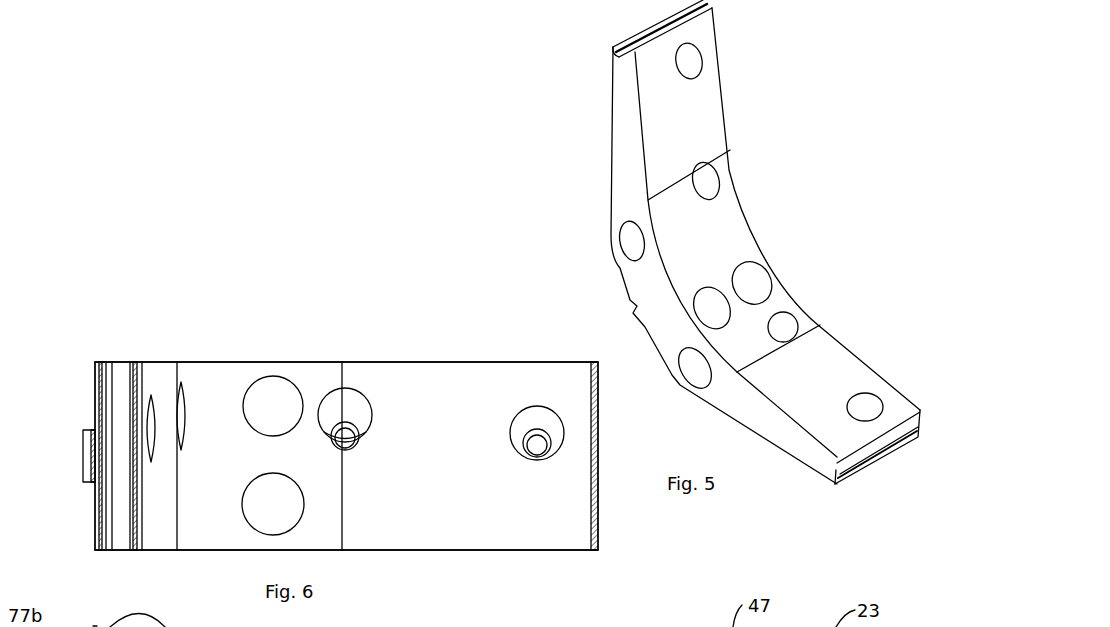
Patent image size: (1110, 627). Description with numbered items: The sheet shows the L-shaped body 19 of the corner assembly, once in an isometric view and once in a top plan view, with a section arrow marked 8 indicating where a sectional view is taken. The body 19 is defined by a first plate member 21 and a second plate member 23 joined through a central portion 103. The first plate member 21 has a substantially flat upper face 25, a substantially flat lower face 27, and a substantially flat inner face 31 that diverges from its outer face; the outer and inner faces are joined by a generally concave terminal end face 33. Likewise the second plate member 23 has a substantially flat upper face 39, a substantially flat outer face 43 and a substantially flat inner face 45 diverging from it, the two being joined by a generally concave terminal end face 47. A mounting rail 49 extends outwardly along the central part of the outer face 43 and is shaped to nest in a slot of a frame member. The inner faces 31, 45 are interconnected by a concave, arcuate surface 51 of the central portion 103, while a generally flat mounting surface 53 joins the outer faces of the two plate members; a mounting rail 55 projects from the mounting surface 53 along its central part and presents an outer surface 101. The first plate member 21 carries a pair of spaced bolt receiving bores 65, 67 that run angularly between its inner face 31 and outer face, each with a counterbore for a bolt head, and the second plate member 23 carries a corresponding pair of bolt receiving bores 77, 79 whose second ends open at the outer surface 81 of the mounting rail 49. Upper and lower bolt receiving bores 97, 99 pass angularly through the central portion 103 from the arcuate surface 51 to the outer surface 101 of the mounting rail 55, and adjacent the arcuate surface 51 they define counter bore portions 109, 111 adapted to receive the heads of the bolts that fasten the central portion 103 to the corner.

In FIG. 6, the section line 8 is at (530, 626).
In FIG. 5, the L-shaped body 19 is at (762, 166).
In FIG. 6, the first plate member 21 is at (418, 355).
In FIG. 5, the first plate member 21 is at (780, 455).
In FIG. 6, the second plate member 23 is at (105, 554).
In FIG. 5, the second plate member 23 is at (610, 100).
In FIG. 6, the upper face 25 is at (509, 552).
In FIG. 5, the upper face 25 is at (757, 415).
In FIG. 6, the lower face 27 is at (469, 362).
In FIG. 6, the inner face 31 is at (438, 469).
In FIG. 5, the inner face 31 is at (807, 390).
In FIG. 6, the terminal end face 33 is at (599, 488).
In FIG. 5, the terminal end face 33 is at (850, 468).
In FIG. 5, the upper face 39 is at (638, 168).
In FIG. 6, the outer face 43 is at (94, 405).
In FIG. 5, the inner face 45 is at (672, 116).
In FIG. 5, the terminal end face 47 is at (616, 47).
In FIG. 6, the mounting rail 49 is at (84, 482).
In FIG. 6, the arcuate surface 51 is at (222, 469).
In FIG. 5, the arcuate surface 51 is at (724, 229).
In FIG. 5, the mounting surface 53 is at (611, 262).
In FIG. 5, the mounting rail 55 is at (628, 306).
In FIG. 6, the bolt receiving bore 65 is at (541, 408).
In FIG. 5, the bolt receiving bore 65 is at (868, 400).
In FIG. 6, the bolt receiving bore 67 is at (347, 395).
In FIG. 5, the bolt receiving bore 67 is at (790, 322).
In FIG. 6, the bolt receiving bore 77 is at (152, 420).
In FIG. 5, the bolt receiving bore 77 is at (692, 68).
In FIG. 6, the bolt receiving bore 79 is at (182, 410).
In FIG. 5, the bolt receiving bore 79 is at (712, 178).
In FIG. 6, the outer surface 81 is at (82, 457).
In FIG. 6, the bolt receiving bore 97 is at (292, 516).
In FIG. 5, the bolt receiving bore 97 is at (705, 300).
In FIG. 6, the bolt receiving bore 99 is at (262, 388).
In FIG. 5, the bolt receiving bore 99 is at (763, 278).
In FIG. 5, the outer surface 101 is at (636, 320).
In FIG. 6, the central portion 103 is at (221, 553).
In FIG. 5, the central portion 103 is at (756, 232).
In FIG. 6, the counter bore portion 109 is at (258, 507).
In FIG. 6, the counter bore portion 111 is at (280, 398).